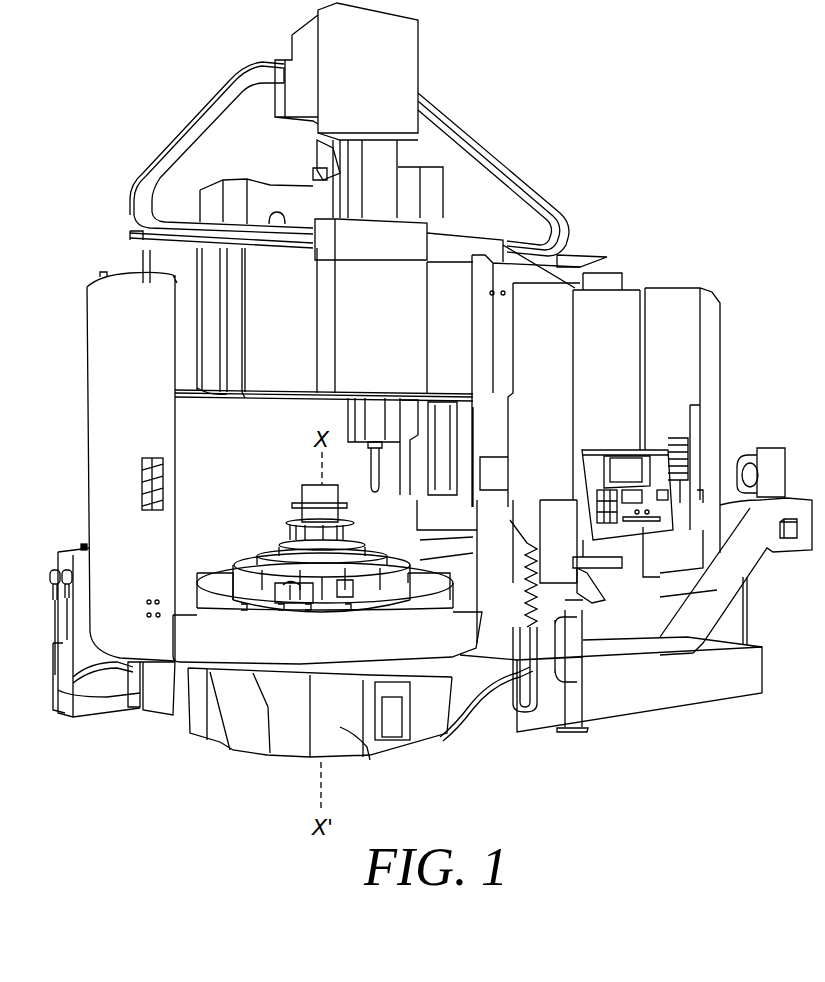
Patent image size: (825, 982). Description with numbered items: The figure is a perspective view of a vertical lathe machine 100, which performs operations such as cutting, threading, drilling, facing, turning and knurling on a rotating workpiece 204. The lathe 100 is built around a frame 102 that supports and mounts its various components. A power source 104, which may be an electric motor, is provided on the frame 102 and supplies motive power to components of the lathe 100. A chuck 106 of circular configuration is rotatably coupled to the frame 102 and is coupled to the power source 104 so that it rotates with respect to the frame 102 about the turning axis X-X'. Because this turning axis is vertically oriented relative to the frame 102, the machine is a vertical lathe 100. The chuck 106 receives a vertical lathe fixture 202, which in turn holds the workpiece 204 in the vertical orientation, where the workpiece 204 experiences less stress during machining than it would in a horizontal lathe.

The vertical lathe machine 100 is at (431, 372).
The frame 102 is at (207, 637).
The power source 104 is at (360, 722).
The chuck 106 is at (207, 590).
The vertical lathe fixture 202 is at (270, 530).
The workpiece 204 is at (307, 498).